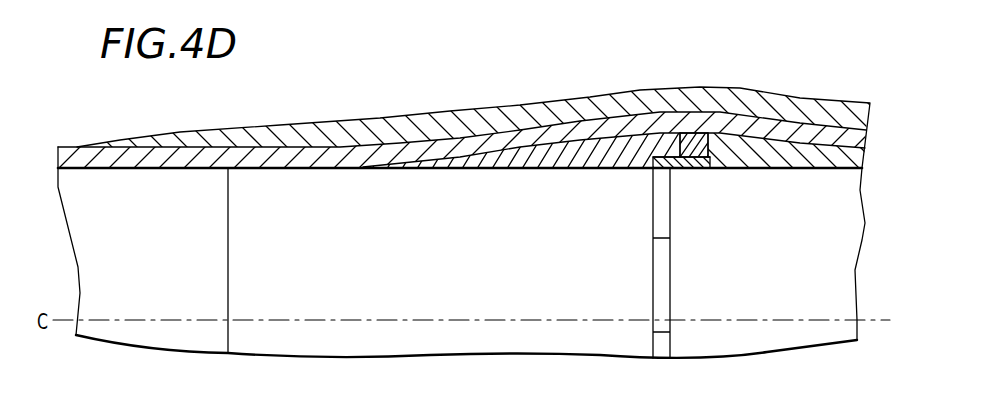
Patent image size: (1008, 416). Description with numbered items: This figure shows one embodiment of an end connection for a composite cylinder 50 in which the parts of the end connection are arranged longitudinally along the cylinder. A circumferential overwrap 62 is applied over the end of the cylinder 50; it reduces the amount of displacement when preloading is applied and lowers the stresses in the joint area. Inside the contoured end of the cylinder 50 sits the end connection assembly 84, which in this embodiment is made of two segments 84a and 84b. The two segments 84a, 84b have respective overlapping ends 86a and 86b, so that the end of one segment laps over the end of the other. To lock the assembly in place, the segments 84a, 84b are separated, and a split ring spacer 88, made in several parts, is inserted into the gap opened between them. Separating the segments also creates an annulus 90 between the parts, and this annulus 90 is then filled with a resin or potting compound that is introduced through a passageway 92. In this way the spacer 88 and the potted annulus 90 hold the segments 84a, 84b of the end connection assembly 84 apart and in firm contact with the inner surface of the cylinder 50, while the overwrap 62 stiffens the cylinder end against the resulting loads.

The composite cylinder 50 is at (77, 147).
The circumferential overwrap 62 is at (323, 128).
The end connection assembly 84 is at (625, 101).
The segment 84a is at (570, 148).
The segment 84b is at (777, 145).
The overlapping end 86a is at (667, 145).
The overlapping end 86b is at (717, 145).
The split ring spacer 88 is at (660, 258).
The annulus 90 is at (692, 140).
The passageway 92 is at (697, 175).